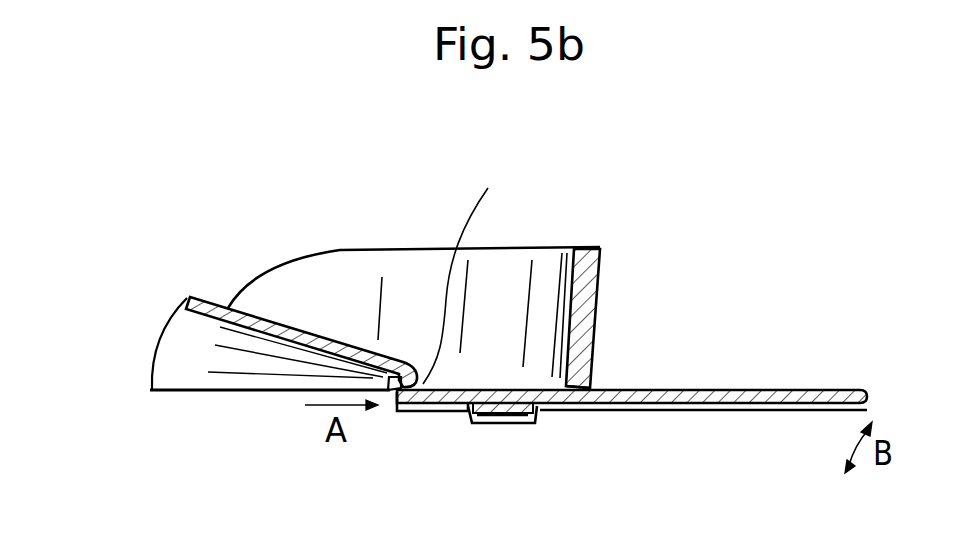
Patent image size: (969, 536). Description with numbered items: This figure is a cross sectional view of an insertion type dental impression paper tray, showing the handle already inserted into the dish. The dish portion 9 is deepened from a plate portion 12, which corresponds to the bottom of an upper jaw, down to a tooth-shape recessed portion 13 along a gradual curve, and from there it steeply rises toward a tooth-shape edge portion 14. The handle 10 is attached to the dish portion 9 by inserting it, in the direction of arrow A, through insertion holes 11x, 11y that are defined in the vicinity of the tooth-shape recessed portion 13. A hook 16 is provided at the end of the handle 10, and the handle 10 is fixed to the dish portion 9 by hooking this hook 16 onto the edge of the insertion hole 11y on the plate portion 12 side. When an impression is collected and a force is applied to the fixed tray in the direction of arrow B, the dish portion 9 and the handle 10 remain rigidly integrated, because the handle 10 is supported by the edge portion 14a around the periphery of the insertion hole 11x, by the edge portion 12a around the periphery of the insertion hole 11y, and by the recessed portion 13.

The dish portion 9 is at (422, 277).
The handle 10 is at (670, 389).
The insertion hole 11x is at (543, 412).
The insertion hole 11y is at (467, 413).
The plate portion 12 is at (270, 318).
The edge portion 12a is at (470, 269).
The tooth-shape recessed portion 13 is at (498, 415).
The tooth-shape edge portion 14 is at (597, 248).
The edge portion 14a is at (590, 386).
The hook 16 is at (395, 396).